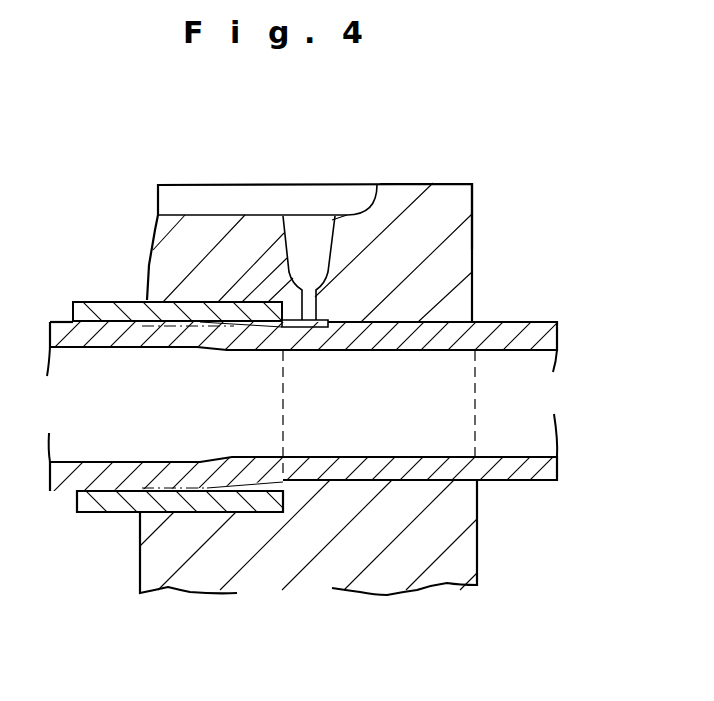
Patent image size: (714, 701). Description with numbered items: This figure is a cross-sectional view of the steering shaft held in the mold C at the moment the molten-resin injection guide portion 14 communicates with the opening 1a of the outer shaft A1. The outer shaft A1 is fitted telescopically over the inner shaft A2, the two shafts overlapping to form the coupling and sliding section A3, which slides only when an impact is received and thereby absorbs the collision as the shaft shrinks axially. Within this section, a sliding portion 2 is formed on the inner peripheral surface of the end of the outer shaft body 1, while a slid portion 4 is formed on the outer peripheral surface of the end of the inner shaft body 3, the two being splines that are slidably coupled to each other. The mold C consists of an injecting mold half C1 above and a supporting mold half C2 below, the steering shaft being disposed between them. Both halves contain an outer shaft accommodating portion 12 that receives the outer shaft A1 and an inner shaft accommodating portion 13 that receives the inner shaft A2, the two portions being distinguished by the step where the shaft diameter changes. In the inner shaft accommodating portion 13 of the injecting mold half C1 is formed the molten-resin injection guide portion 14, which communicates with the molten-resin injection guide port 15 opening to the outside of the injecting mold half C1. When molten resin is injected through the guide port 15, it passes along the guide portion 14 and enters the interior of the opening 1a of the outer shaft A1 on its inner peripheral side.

The outer shaft body 1 is at (147, 298).
The opening of the outer shaft 1a is at (255, 328).
The sliding portion 2 is at (103, 498).
The inner shaft body 3 is at (500, 323).
The slid portion 4 is at (125, 320).
The outer shaft accommodating portion 12 is at (156, 506).
The inner shaft accommodating portion 13 is at (412, 475).
The molten-resin injection guide portion 14 is at (313, 328).
The molten-resin injection guide port 15 is at (313, 233).
The outer shaft A1 is at (93, 294).
The inner shaft A2 is at (527, 323).
The coupling and sliding section A3 is at (213, 293).
The mold C is at (455, 178).
The injecting mold half C1 is at (477, 242).
The supporting mold half C2 is at (484, 549).